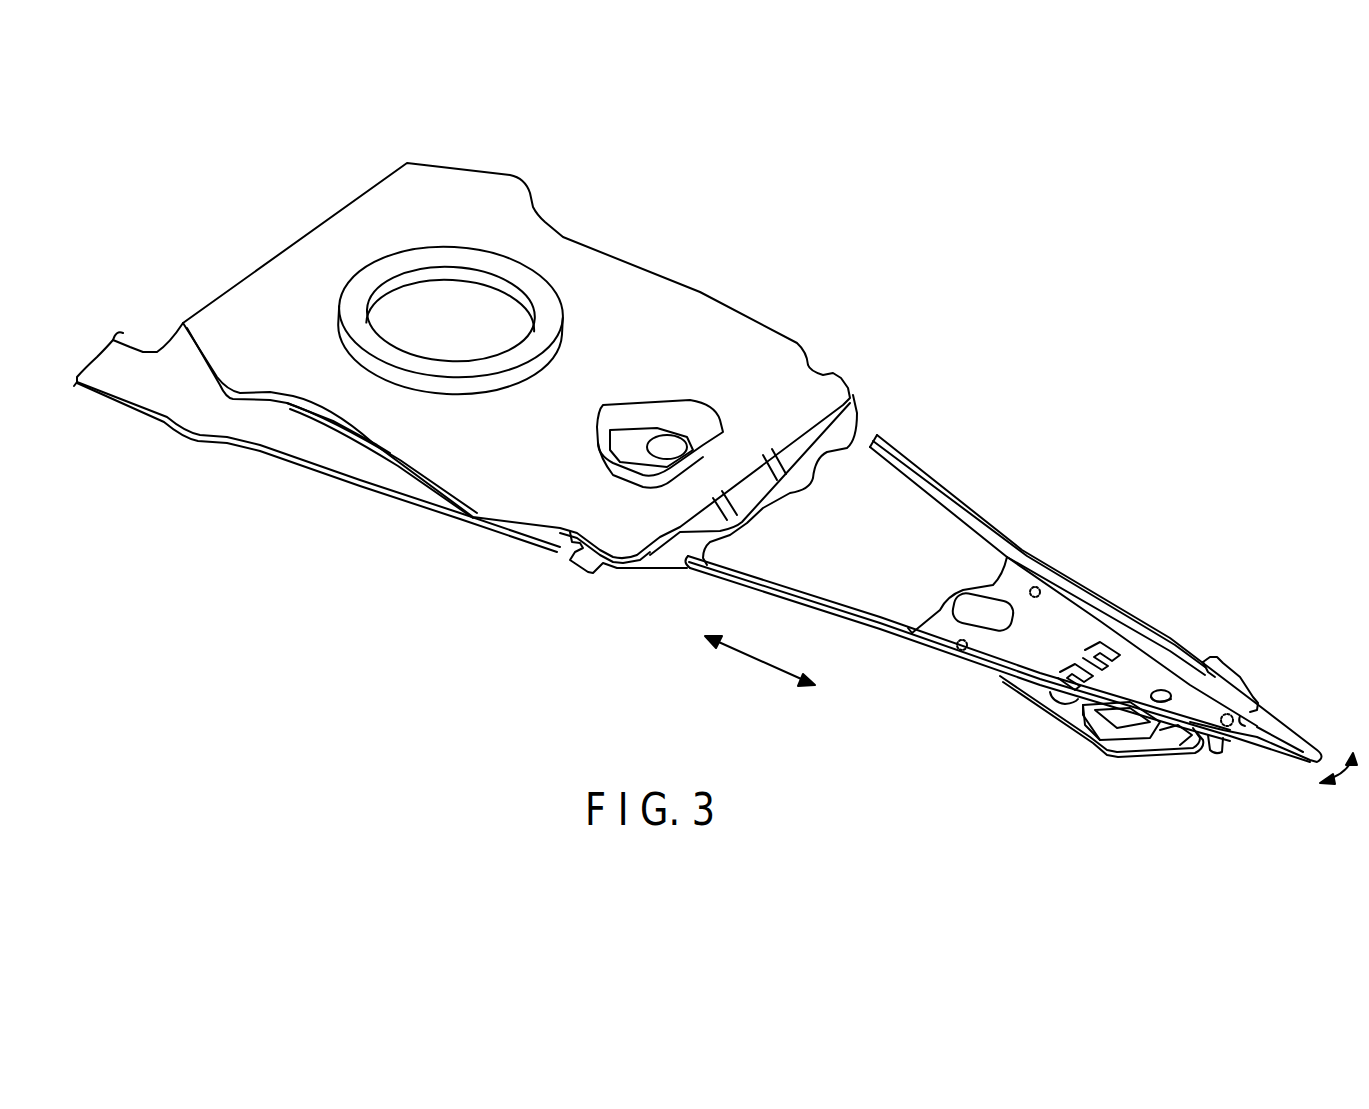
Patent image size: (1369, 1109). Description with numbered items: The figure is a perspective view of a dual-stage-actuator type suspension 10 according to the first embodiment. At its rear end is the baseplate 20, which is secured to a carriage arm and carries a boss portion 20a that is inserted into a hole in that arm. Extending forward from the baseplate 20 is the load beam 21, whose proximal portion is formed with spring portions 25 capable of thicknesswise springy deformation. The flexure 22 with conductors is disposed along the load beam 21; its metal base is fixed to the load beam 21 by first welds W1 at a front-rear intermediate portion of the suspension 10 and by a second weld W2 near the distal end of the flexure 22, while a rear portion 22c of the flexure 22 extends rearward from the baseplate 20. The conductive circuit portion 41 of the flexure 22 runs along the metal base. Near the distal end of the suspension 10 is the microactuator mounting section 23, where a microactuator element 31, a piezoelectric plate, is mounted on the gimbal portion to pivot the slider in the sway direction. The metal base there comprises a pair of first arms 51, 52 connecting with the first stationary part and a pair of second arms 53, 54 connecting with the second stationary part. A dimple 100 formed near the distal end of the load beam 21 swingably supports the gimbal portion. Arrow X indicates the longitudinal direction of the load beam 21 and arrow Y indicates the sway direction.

The suspension 10 is at (928, 246).
The baseplate 20 is at (640, 286).
The boss portion 20a is at (538, 266).
The load beam 21 is at (1067, 620).
The flexure 22 is at (1170, 640).
The rear portion 22c is at (283, 437).
The microactuator mounting section 23 is at (1078, 753).
The spring portions 25 is at (848, 428).
The microactuator element 31 is at (1140, 727).
The conductive circuit portion 41 is at (368, 483).
The first arm 51 is at (1040, 700).
The first arm 52 is at (1170, 668).
The second arm 53 is at (1173, 750).
The second arm 54 is at (1240, 677).
The dimple 100 is at (1166, 692).
The first welds W1 is at (1036, 590).
The second weld W2 is at (1240, 716).
The arrow X is at (735, 661).
The arrow Y is at (1347, 778).